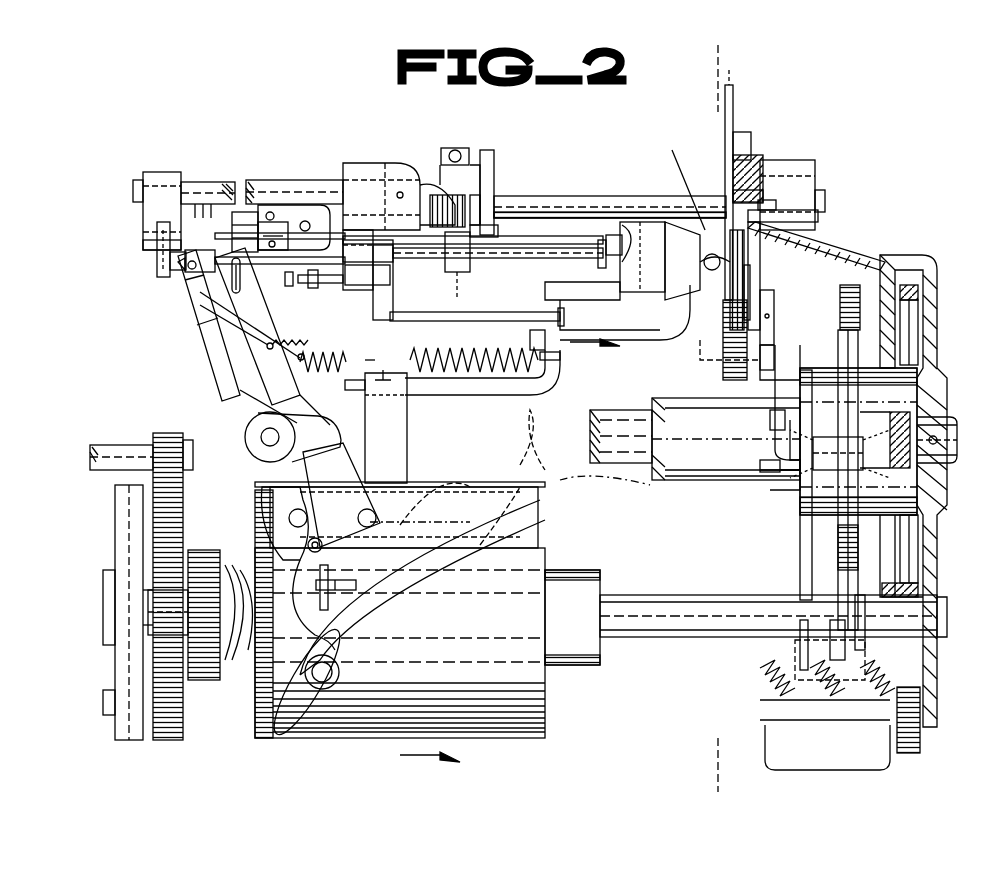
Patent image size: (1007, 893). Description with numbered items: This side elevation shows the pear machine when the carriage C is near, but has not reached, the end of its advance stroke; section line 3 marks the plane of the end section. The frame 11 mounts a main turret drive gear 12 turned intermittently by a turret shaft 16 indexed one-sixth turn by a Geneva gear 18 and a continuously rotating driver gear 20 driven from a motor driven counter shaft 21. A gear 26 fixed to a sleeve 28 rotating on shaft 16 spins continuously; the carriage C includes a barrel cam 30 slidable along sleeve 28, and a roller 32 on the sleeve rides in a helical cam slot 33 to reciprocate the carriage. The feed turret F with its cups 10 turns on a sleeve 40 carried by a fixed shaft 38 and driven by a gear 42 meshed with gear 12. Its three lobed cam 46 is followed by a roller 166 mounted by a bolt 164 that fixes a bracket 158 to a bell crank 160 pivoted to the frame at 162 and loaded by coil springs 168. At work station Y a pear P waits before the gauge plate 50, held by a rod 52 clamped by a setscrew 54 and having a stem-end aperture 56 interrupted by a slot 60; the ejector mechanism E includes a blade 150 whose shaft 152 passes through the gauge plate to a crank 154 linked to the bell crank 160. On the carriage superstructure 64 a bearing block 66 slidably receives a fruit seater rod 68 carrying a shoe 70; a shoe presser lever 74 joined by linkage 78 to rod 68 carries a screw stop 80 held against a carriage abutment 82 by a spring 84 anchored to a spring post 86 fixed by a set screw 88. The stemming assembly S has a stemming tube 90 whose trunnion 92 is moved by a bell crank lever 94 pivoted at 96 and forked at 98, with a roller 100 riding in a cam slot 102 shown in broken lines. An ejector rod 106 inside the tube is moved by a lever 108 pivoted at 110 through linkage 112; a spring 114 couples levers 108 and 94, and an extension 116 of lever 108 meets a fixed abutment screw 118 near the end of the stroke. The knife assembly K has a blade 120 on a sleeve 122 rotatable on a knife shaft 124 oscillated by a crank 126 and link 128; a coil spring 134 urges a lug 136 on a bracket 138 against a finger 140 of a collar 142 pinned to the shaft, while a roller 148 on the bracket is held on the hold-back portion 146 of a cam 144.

The section line 3- 3 is at (683, 57).
The fruit cup 10 is at (665, 350).
The frame 11 is at (860, 265).
The main turret drive gear 12 is at (922, 735).
The turret shaft 16 is at (103, 606).
The Geneva gear 18 is at (115, 532).
The driver gear 20 is at (183, 515).
The counter shaft 21 is at (110, 445).
The gear 26 is at (200, 545).
The sleeve 28 is at (230, 662).
The barrel cam 30 is at (270, 740).
The roller 32 is at (360, 655).
The helical cam slot 33 is at (410, 605).
The fixed shaft 38 is at (628, 463).
The sleeve 40 is at (690, 480).
The gear 42 is at (905, 330).
The three lobed cam 46 is at (892, 364).
The gauge plate 50 is at (760, 268).
The rod 52 is at (790, 226).
The setscrew 54 is at (770, 213).
The stem-end aperture 56 is at (772, 254).
The slot 60 is at (740, 285).
The superstructure 64 is at (410, 433).
The bearing block 66 is at (465, 272).
The fruit seater rod 68 is at (580, 218).
The fruit seater shoe 70 is at (622, 226).
The shoe presser lever 74 is at (340, 338).
The linkage 78 is at (285, 204).
The adjustable screw stop 80 is at (320, 290).
The carriage abutment 82 is at (380, 292).
The spring 84 is at (492, 348).
The spring post 86 is at (548, 390).
The set screw 88 is at (385, 367).
The stemming tube 90 is at (548, 260).
The trunnion 92 is at (205, 236).
The bell crank lever 94 is at (222, 348).
The pivot 96 is at (370, 522).
The fork 98 is at (205, 340).
The roller 100 is at (366, 510).
The cam slot 102 is at (420, 487).
The ejector rod 106 is at (600, 270).
The ejector rod lever 108 is at (222, 366).
The pivot 110 is at (286, 492).
The linkage 112 is at (190, 275).
The spring 114 is at (283, 348).
The extension 116 is at (295, 620).
The fixed abutment screw 118 is at (332, 600).
The blade 120 is at (725, 118).
The sleeve 122 is at (493, 162).
The knife rotating shaft 124 is at (208, 180).
The crank 126 is at (158, 172).
The link 128 is at (157, 264).
The coil spring 134 is at (437, 170).
The lug 136 is at (516, 195).
The bracket 138 is at (480, 165).
The rod 140 is at (500, 240).
The collar 142 is at (385, 163).
The cam 144 is at (348, 130).
The knife hold-back portion 146 is at (355, 160).
The roller 148 is at (470, 150).
The ejector blade 150 is at (745, 348).
The shaft 152 is at (775, 316).
The crank 154 is at (775, 335).
The bracket 158 is at (785, 437).
The bell crank 160 is at (828, 548).
The pivot 162 is at (795, 650).
The bolt 164 is at (800, 600).
The roller 166 is at (905, 430).
The coil springs 168 is at (880, 740).
The carriage C is at (225, 430).
The ejector mechanism E is at (740, 352).
The feed turret F is at (855, 280).
The knife assembly K is at (760, 150).
The pear P is at (672, 235).
The stemming assembly S is at (185, 312).
The work station Y is at (679, 181).